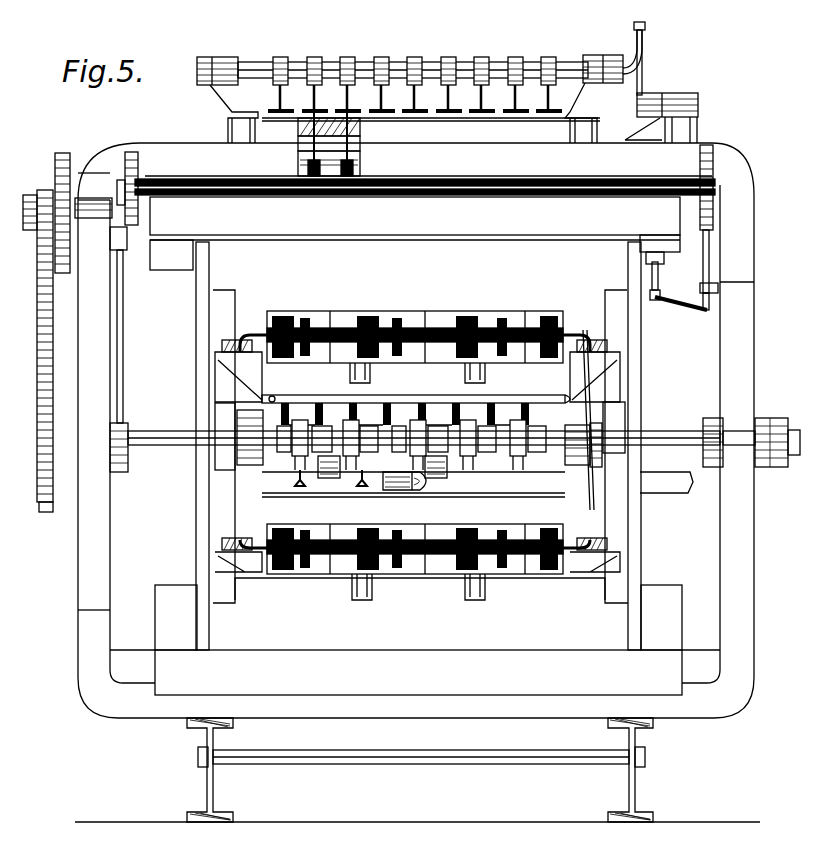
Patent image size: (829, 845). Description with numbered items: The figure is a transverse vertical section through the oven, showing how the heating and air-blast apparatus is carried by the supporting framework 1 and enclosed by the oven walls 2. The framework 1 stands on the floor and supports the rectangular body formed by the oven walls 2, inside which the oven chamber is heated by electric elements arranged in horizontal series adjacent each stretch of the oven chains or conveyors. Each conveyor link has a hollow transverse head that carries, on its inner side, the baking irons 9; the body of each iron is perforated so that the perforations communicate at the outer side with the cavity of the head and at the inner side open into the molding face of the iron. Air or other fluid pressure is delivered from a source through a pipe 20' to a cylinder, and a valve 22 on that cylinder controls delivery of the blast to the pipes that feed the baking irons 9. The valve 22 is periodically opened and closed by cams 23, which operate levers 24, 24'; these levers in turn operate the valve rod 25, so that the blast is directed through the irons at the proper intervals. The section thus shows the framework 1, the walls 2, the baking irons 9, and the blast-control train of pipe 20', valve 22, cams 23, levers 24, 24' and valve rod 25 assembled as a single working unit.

The supporting framework 1 is at (207, 790).
The oven walls 2 is at (416, 430).
The baking irons 9 is at (340, 365).
The pipe 20' is at (464, 448).
The valve 22 is at (360, 153).
The cams 23 is at (130, 170).
The lever 24 is at (660, 82).
The lever 24' is at (414, 368).
The valve rod 25 is at (308, 103).